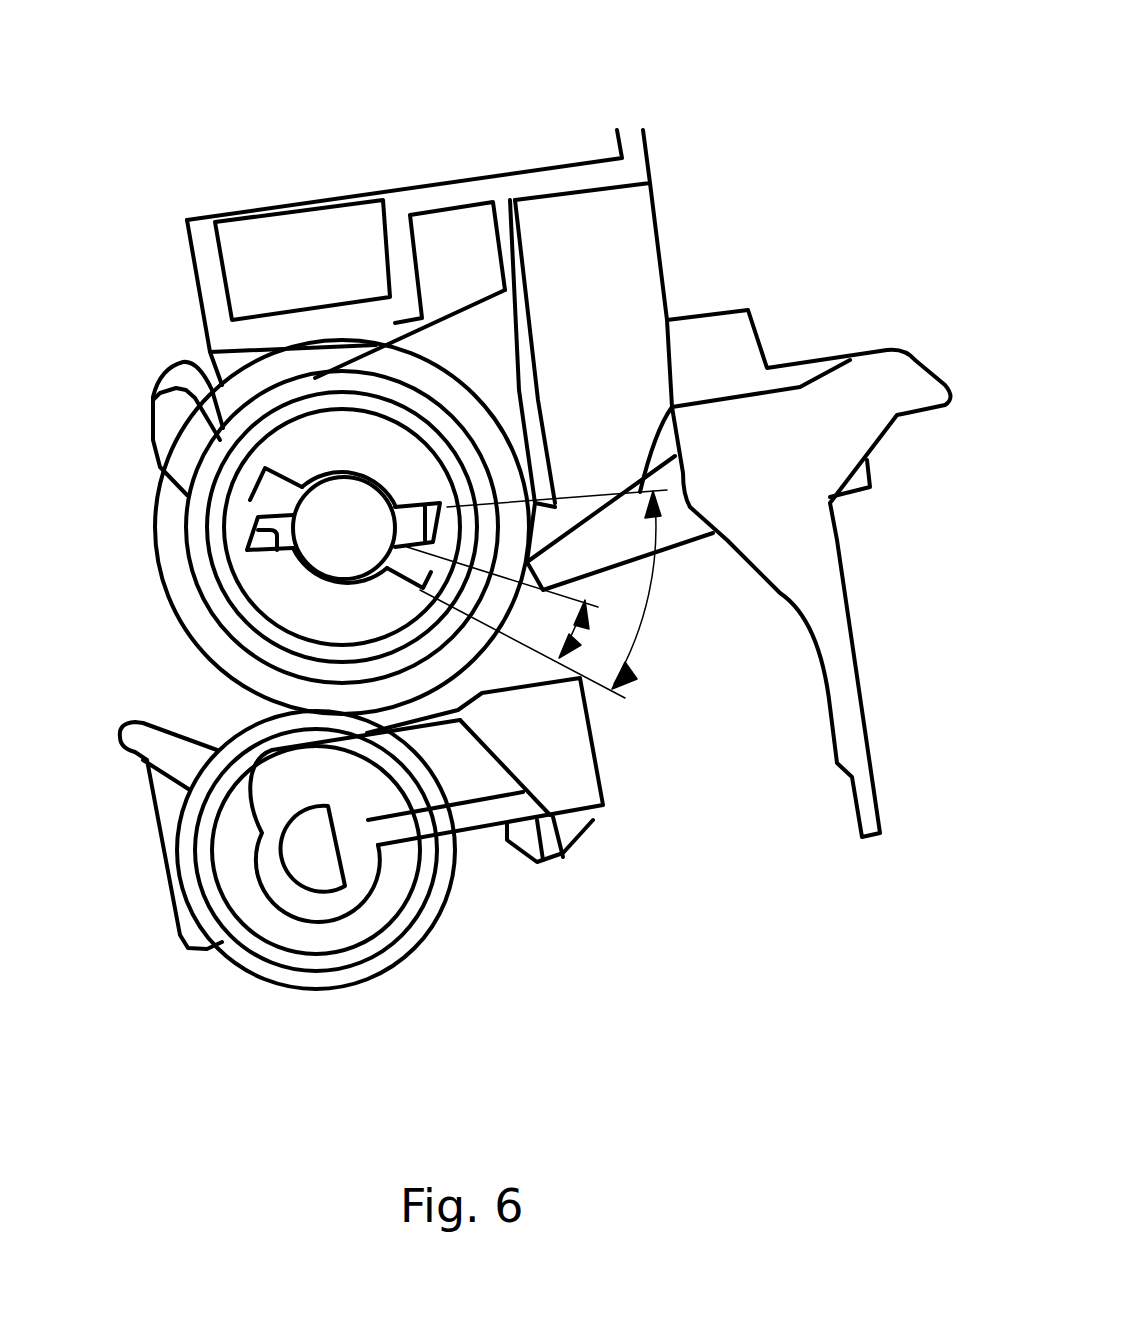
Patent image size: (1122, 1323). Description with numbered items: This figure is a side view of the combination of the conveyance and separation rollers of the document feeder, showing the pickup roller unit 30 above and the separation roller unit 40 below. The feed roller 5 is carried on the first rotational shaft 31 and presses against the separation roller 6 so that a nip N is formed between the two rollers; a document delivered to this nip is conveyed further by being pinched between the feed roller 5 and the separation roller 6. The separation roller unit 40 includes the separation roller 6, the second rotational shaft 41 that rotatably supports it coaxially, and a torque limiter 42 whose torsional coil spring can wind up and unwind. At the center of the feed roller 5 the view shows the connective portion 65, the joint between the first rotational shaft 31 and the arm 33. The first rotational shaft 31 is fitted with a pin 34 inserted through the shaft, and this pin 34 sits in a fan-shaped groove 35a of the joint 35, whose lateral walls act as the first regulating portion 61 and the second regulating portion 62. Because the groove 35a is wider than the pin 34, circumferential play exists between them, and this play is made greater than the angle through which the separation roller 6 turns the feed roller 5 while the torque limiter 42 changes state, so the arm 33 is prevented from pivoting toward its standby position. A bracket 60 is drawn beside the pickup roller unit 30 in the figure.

The pickup roller unit 30 is at (579, 70).
The arm 33 is at (473, 327).
The joint 35 is at (298, 437).
The pin 34 is at (409, 520).
The connective portion 65 is at (120, 458).
The second regulating portion 62 is at (262, 474).
The groove 35a is at (265, 506).
The first regulating portion 61 is at (262, 540).
The feed roller 5 is at (185, 620).
The first rotational shaft 31 is at (323, 558).
The nip N is at (228, 713).
The bracket 60 is at (847, 708).
The separation roller 6 is at (375, 978).
The second rotational shaft 41 is at (310, 873).
The torque limiter 42 is at (343, 933).
The separation roller unit 40 is at (533, 970).